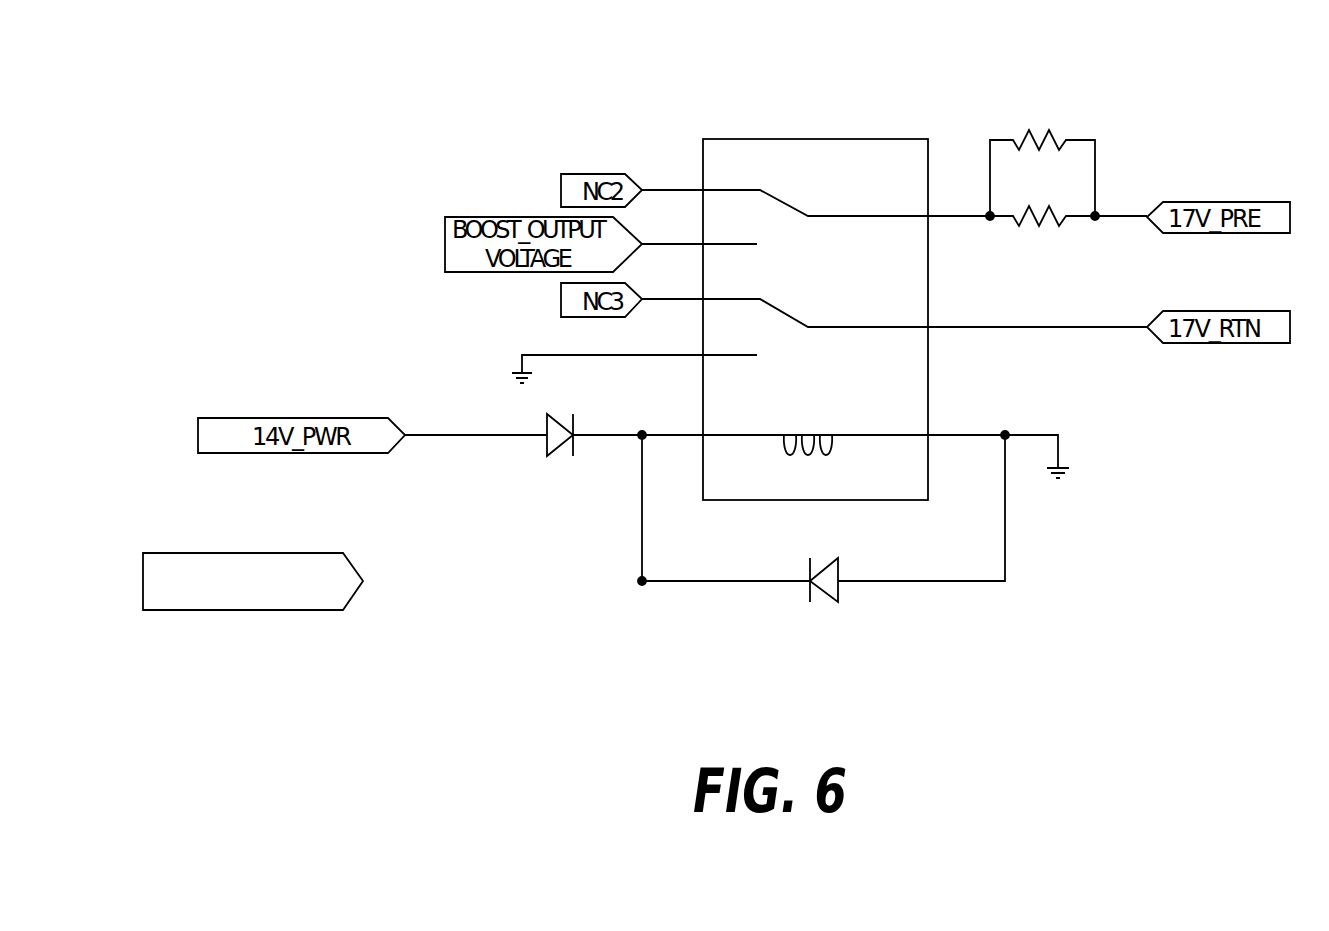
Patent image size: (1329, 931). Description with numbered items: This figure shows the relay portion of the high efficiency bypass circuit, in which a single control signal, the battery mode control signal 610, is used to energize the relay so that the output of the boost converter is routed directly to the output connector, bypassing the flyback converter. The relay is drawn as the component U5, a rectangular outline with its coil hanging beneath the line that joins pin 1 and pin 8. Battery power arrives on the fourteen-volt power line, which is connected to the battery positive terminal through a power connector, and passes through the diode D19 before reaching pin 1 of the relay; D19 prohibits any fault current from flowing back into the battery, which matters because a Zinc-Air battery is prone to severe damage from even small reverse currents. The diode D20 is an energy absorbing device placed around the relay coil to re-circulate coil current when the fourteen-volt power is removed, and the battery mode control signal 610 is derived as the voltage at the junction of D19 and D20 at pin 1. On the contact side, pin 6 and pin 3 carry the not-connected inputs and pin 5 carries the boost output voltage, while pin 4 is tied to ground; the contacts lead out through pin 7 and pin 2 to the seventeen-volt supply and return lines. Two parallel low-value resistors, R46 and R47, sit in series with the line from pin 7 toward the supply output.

The battery mode control signal 610 is at (217, 610).
The CAS-112-12 relay U5 is at (815, 286).
The diode D19 is at (523, 467).
The energy absorbing device D20 is at (823, 539).
The 0.2 ohm resistor R46 is at (1042, 159).
The 0.2 ohm resistor R47 is at (1068, 219).
The pin 1 of the relay 1 is at (672, 419).
The relay pin 2 is at (1037, 311).
The relay pin 3 is at (785, 302).
The relay pin 4 is at (634, 357).
The relay pin 5 is at (699, 236).
The relay pin 6 is at (785, 192).
The relay pin 7 is at (959, 200).
The relay pin 8 is at (998, 440).